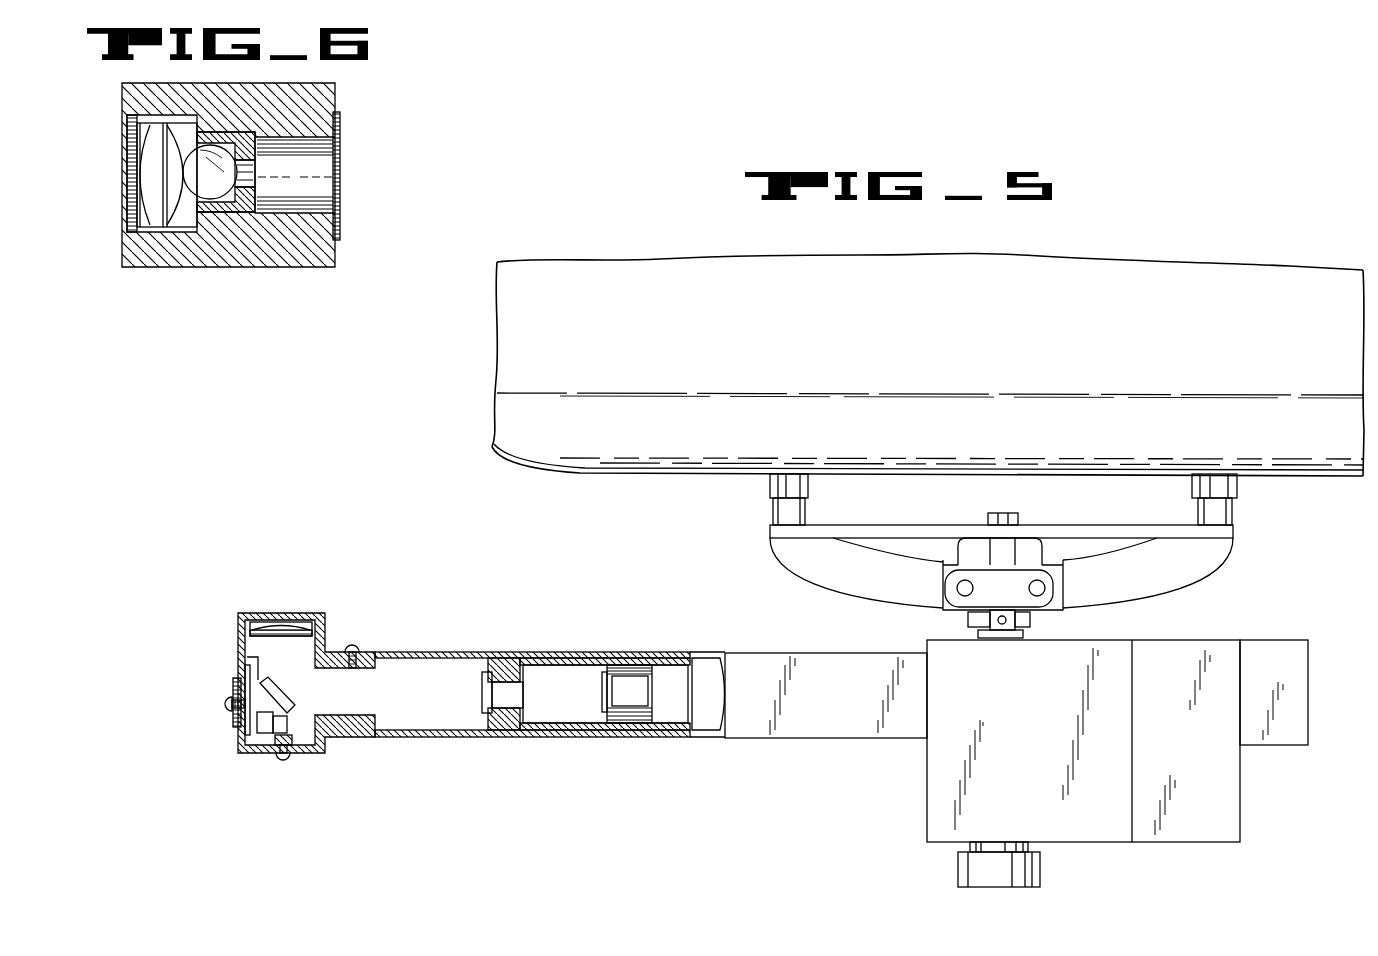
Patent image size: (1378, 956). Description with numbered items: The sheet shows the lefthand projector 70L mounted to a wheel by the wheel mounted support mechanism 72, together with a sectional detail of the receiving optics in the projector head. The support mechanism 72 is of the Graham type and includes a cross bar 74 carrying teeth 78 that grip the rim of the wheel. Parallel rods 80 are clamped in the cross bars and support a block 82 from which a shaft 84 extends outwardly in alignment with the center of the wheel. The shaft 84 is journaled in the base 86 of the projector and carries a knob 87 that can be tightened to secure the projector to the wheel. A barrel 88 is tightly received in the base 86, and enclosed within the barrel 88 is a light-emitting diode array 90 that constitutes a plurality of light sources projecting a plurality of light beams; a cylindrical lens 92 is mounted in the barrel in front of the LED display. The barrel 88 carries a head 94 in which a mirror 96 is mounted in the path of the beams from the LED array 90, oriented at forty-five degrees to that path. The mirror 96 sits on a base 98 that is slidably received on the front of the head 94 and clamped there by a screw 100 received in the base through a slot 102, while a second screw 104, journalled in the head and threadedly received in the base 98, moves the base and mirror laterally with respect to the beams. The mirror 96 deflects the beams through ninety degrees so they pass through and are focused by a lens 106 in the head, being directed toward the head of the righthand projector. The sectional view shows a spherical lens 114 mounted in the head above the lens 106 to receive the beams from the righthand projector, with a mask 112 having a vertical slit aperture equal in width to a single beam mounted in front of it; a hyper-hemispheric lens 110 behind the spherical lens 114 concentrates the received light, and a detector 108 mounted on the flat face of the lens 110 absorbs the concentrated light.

In FIG. 5, the projector 70L is at (439, 692).
In FIG. 5, the wheel mounted support mechanism 72 is at (971, 546).
In FIG. 5, the cross bar 74 is at (926, 526).
In FIG. 5, the teeth 78 is at (770, 482).
In FIG. 5, the parallel rods 80 is at (1029, 588).
In FIG. 5, the block 82 is at (1032, 621).
In FIG. 5, the shaft 84 is at (976, 633).
In FIG. 5, the base 86 is at (1016, 726).
In FIG. 5, the knob 87 is at (958, 868).
In FIG. 5, the barrel 88 is at (817, 702).
In FIG. 5, the light-emitting diode array 90 is at (617, 696).
In FIG. 5, the cylindrical lens 92 is at (481, 699).
In FIG. 5, the head 94 is at (246, 750).
In FIG. 5, the mirror 96 is at (291, 700).
In FIG. 5, the base 98 is at (256, 659).
In FIG. 5, the screw 100 is at (221, 704).
In FIG. 5, the slot 102 is at (233, 709).
In FIG. 5, the screw 104 is at (279, 759).
In FIG. 5, the lens 106 is at (283, 626).
In FIG. 6, the detector 108 is at (243, 172).
In FIG. 6, the hyper-hemispheric lens 110 is at (191, 187).
In FIG. 6, the mask 112 is at (127, 145).
In FIG. 6, the spherical lens 114 is at (145, 173).